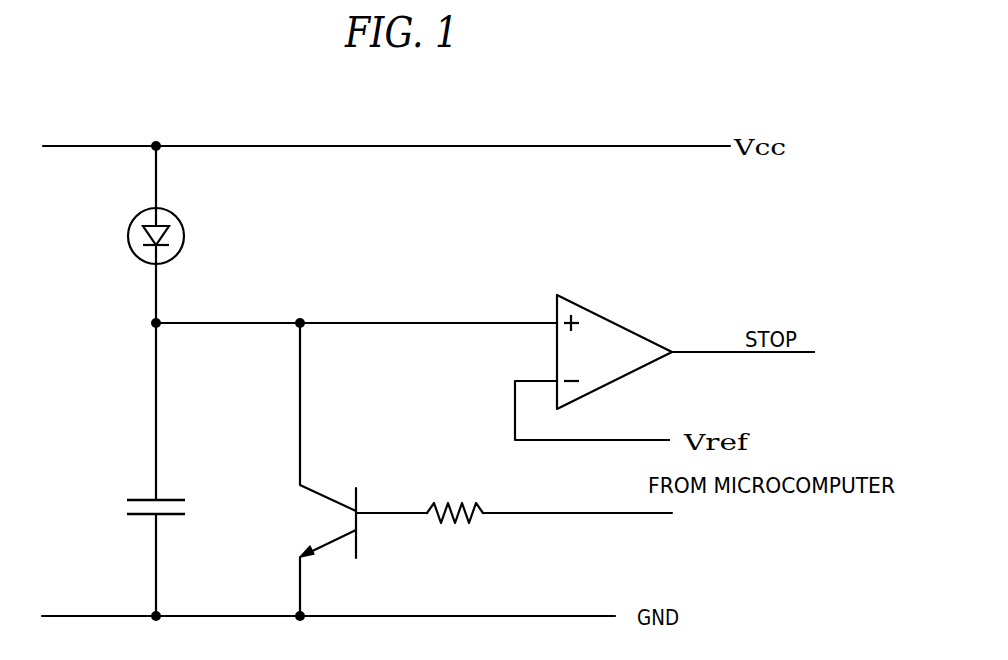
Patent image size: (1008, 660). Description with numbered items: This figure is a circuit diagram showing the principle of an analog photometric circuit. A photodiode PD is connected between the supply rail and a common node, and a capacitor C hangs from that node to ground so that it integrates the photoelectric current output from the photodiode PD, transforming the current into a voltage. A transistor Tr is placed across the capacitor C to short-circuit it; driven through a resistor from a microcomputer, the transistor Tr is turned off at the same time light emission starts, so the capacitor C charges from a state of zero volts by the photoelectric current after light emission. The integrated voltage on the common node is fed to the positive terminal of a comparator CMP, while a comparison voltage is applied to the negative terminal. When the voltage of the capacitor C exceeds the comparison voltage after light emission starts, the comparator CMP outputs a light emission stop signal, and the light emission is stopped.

The photodiode PD is at (134, 236).
The capacitor C is at (159, 493).
The transistor Tr is at (486, 469).
The comparator CMP is at (665, 367).